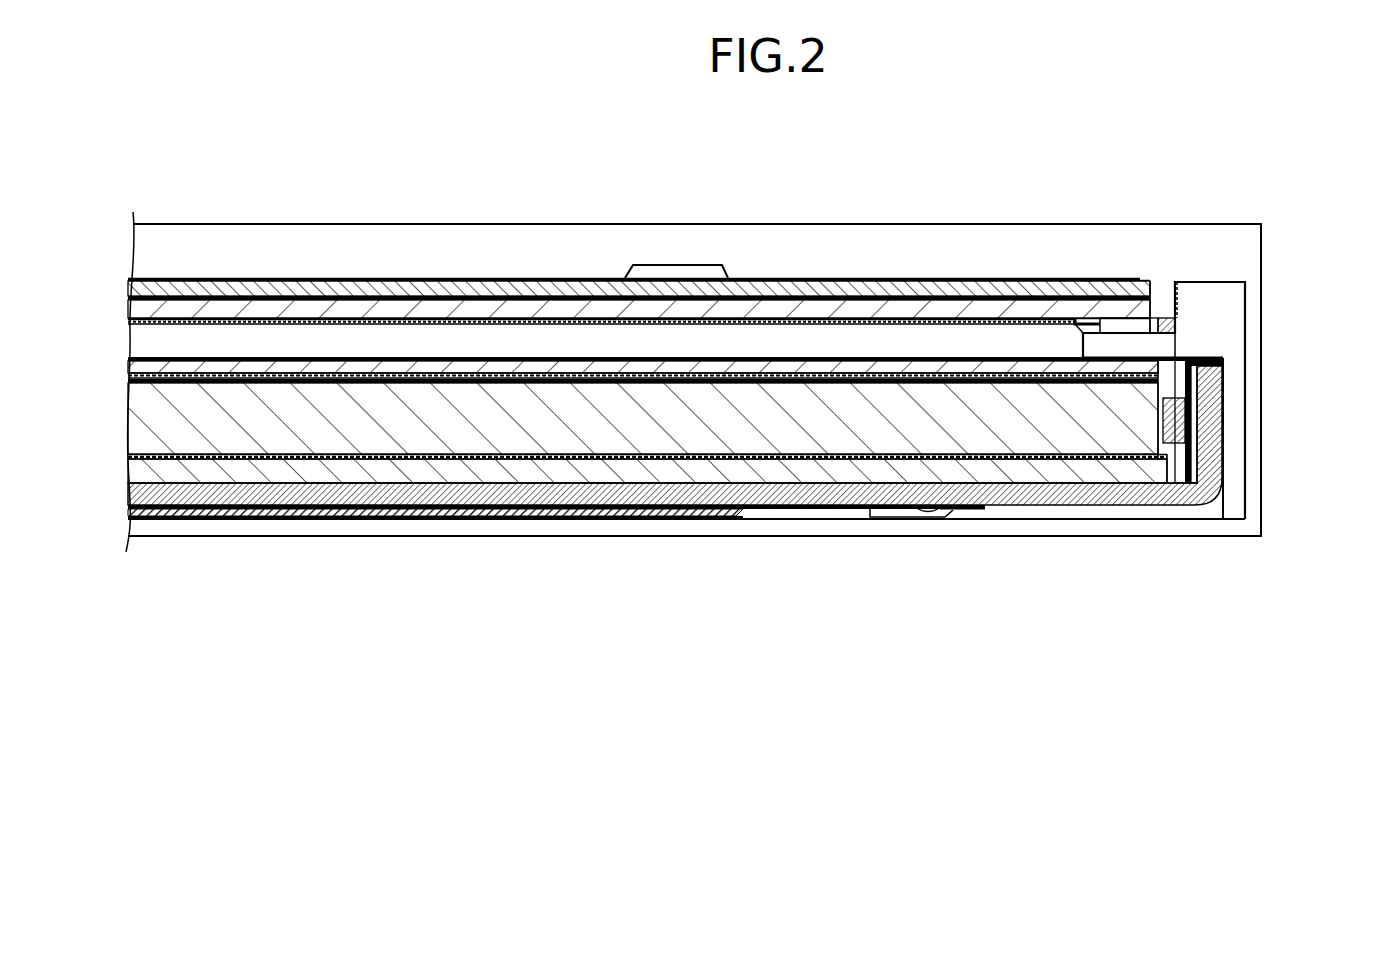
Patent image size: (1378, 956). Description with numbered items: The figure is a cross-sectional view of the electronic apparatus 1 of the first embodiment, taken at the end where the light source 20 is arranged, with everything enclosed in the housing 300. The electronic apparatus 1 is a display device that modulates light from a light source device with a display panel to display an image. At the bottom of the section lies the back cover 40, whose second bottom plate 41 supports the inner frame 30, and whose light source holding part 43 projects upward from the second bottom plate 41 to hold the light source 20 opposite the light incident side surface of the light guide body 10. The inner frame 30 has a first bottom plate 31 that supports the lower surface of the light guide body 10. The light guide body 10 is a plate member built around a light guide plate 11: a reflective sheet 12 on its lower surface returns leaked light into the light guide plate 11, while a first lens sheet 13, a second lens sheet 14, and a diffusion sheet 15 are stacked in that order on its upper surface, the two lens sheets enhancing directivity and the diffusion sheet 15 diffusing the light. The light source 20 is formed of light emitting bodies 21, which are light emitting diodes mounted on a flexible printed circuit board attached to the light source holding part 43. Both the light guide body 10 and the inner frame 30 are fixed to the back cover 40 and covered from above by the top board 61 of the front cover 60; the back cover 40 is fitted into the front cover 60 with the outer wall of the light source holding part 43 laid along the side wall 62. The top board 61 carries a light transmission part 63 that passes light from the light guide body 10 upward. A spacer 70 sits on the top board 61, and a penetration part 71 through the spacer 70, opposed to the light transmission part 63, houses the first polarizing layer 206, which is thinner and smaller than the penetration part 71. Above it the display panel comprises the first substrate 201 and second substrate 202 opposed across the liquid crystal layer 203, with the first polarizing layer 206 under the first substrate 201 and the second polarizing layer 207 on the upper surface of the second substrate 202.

The electronic apparatus 1 is at (1254, 200).
The light guide body 10 is at (63, 370).
The light guide plate 11 is at (133, 457).
The reflective sheet 12 is at (133, 480).
The first lens sheet 13 is at (140, 438).
The second lens sheet 14 is at (133, 378).
The diffusion sheet 15 is at (133, 367).
The light source 20 is at (1326, 385).
The light emitting body 21 is at (1188, 403).
The inner frame 30 is at (880, 524).
The first bottom plate 31 is at (1031, 472).
The back cover 40 is at (748, 473).
The second bottom plate 41 is at (793, 497).
The light source holding part 43 is at (1215, 467).
The front cover 60 is at (1055, 335).
The top board 61 is at (1140, 325).
The side wall 62 is at (1247, 503).
The light transmission part 63 is at (1083, 347).
The spacer 70 is at (1150, 300).
The penetration part 71 is at (1115, 347).
The first substrate 201 is at (137, 321).
The second substrate 202 is at (137, 288).
The liquid crystal layer 203 is at (138, 309).
The first polarizing layer 206 is at (133, 360).
The second polarizing layer 207 is at (134, 263).
The housing 300 is at (813, 245).